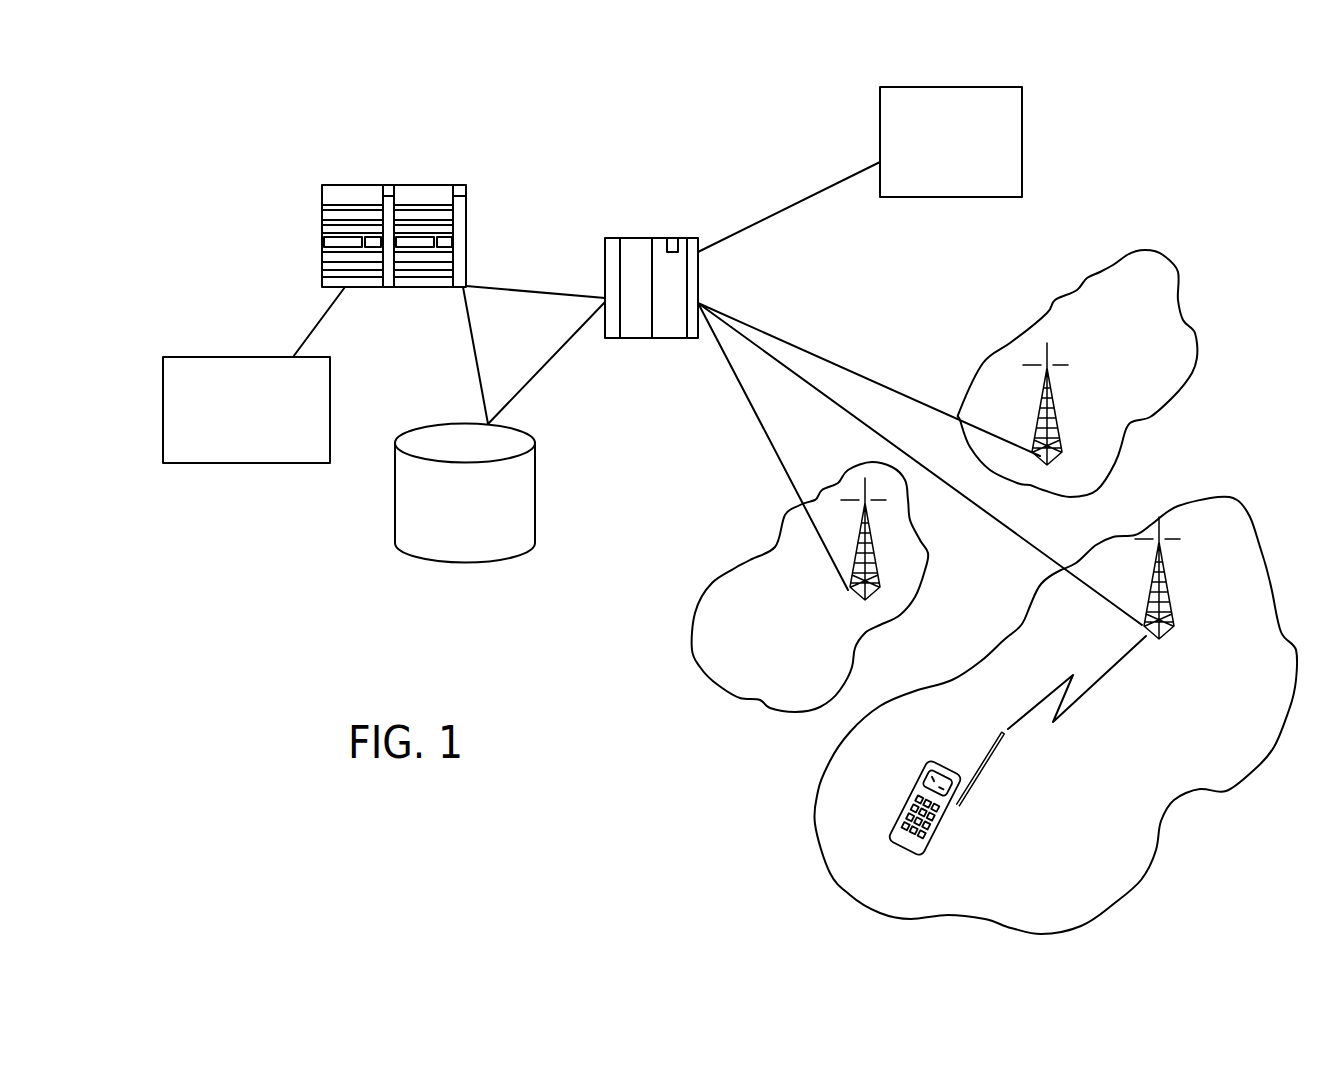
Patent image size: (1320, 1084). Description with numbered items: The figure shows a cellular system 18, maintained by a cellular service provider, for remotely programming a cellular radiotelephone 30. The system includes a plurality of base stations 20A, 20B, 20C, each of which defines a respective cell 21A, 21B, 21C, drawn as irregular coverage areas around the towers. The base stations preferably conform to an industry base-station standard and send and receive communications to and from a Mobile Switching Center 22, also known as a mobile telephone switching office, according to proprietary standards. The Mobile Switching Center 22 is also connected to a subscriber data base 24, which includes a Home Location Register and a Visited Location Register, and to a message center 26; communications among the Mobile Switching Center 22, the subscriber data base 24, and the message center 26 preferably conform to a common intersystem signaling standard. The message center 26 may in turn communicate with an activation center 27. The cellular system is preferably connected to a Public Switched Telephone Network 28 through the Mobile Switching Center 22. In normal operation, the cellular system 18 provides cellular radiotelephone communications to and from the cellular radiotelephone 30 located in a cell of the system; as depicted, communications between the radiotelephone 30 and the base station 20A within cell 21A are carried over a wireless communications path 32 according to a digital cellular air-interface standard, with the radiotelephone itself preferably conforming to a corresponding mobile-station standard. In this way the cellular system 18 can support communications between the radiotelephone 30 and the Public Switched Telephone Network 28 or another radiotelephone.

The cellular system 18 is at (1147, 171).
The base station 20A is at (1178, 605).
The base station 20B is at (1060, 430).
The base station 20C is at (858, 600).
The cell 21A is at (1165, 828).
The cell 21B is at (1178, 272).
The cell 21C is at (692, 648).
The Mobile Switching Center 22 is at (666, 238).
The subscriber data base 24 is at (421, 560).
The message center 26 is at (322, 265).
The activation center 27 is at (202, 356).
The Public Switched Telephone Network 28 is at (1022, 113).
The cellular radiotelephone 30 is at (952, 818).
The wireless communications path 32 is at (1090, 683).